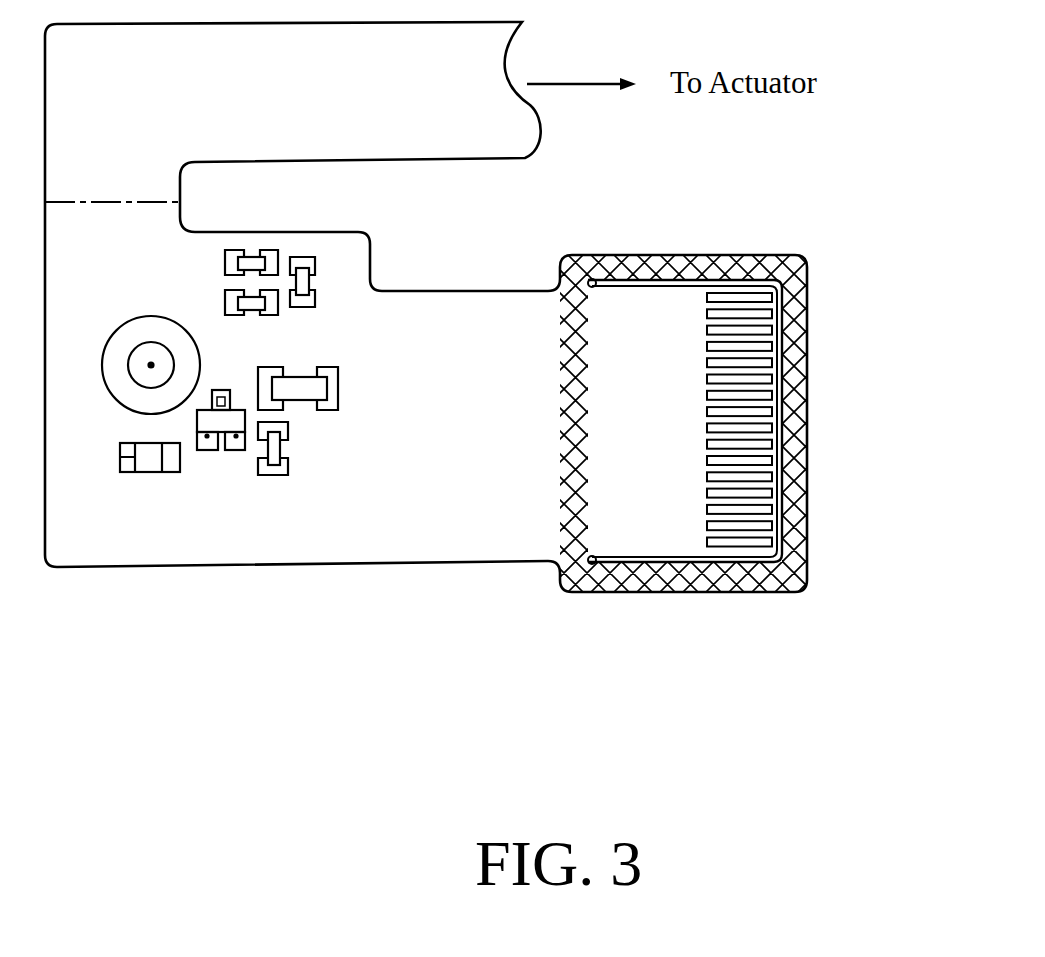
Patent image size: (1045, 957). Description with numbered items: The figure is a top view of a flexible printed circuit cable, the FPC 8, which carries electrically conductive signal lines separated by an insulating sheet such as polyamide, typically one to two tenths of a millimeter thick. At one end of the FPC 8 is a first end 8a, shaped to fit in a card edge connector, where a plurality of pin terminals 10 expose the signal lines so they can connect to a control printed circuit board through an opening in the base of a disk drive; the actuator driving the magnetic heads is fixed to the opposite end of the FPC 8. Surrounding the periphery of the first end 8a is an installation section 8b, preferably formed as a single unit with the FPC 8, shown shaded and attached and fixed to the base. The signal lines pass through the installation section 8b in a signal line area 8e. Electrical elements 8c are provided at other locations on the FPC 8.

The flexible printed circuit 8 is at (461, 292).
The first end 8a is at (735, 296).
The installation section 8b is at (807, 318).
The electrical elements 8c is at (318, 420).
The signal line area 8e is at (573, 490).
The pin terminals 10 is at (807, 530).